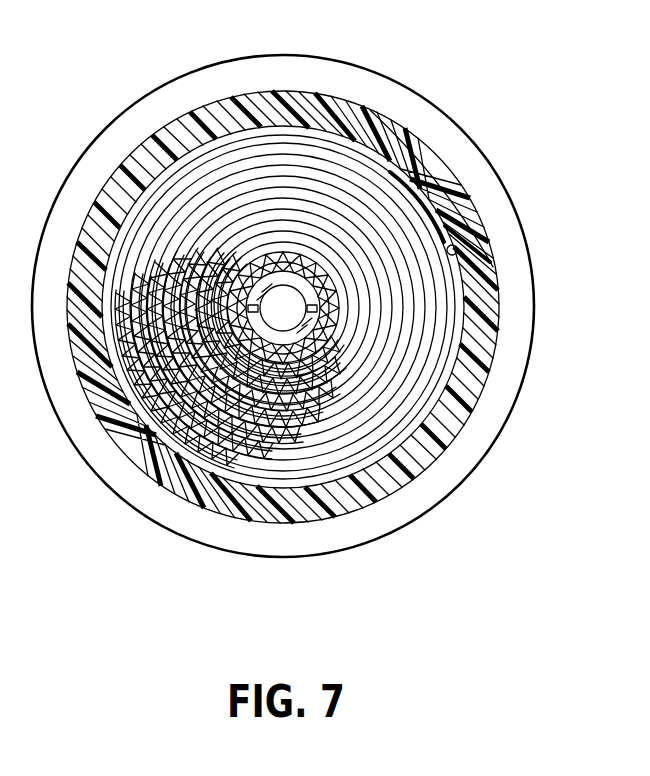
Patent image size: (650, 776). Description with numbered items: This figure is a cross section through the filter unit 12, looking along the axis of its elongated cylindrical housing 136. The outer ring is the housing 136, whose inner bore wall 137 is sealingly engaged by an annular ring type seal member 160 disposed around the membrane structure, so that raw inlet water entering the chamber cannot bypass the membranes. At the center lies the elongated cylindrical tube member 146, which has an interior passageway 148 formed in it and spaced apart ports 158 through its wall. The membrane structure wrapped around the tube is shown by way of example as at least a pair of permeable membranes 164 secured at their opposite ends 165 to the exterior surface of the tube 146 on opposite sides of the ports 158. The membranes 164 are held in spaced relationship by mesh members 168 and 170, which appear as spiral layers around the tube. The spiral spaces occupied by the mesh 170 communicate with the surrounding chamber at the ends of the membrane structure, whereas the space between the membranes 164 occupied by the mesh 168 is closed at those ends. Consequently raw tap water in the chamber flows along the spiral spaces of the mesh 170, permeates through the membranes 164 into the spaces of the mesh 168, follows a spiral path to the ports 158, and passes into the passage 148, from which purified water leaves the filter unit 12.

The filter unit 12 is at (389, 74).
The elongated cylindrical housing 136 is at (444, 166).
The inner bore wall 137 is at (462, 258).
The elongated cylindrical tube member 146 is at (277, 253).
The interior passageway 148 is at (314, 272).
The ports 158 is at (305, 322).
The annular ring type seal member 160 is at (432, 205).
The permeable membranes 164 is at (221, 264).
The opposite ends 165 is at (328, 318).
The mesh member 168 is at (160, 436).
The mesh member 170 is at (196, 446).